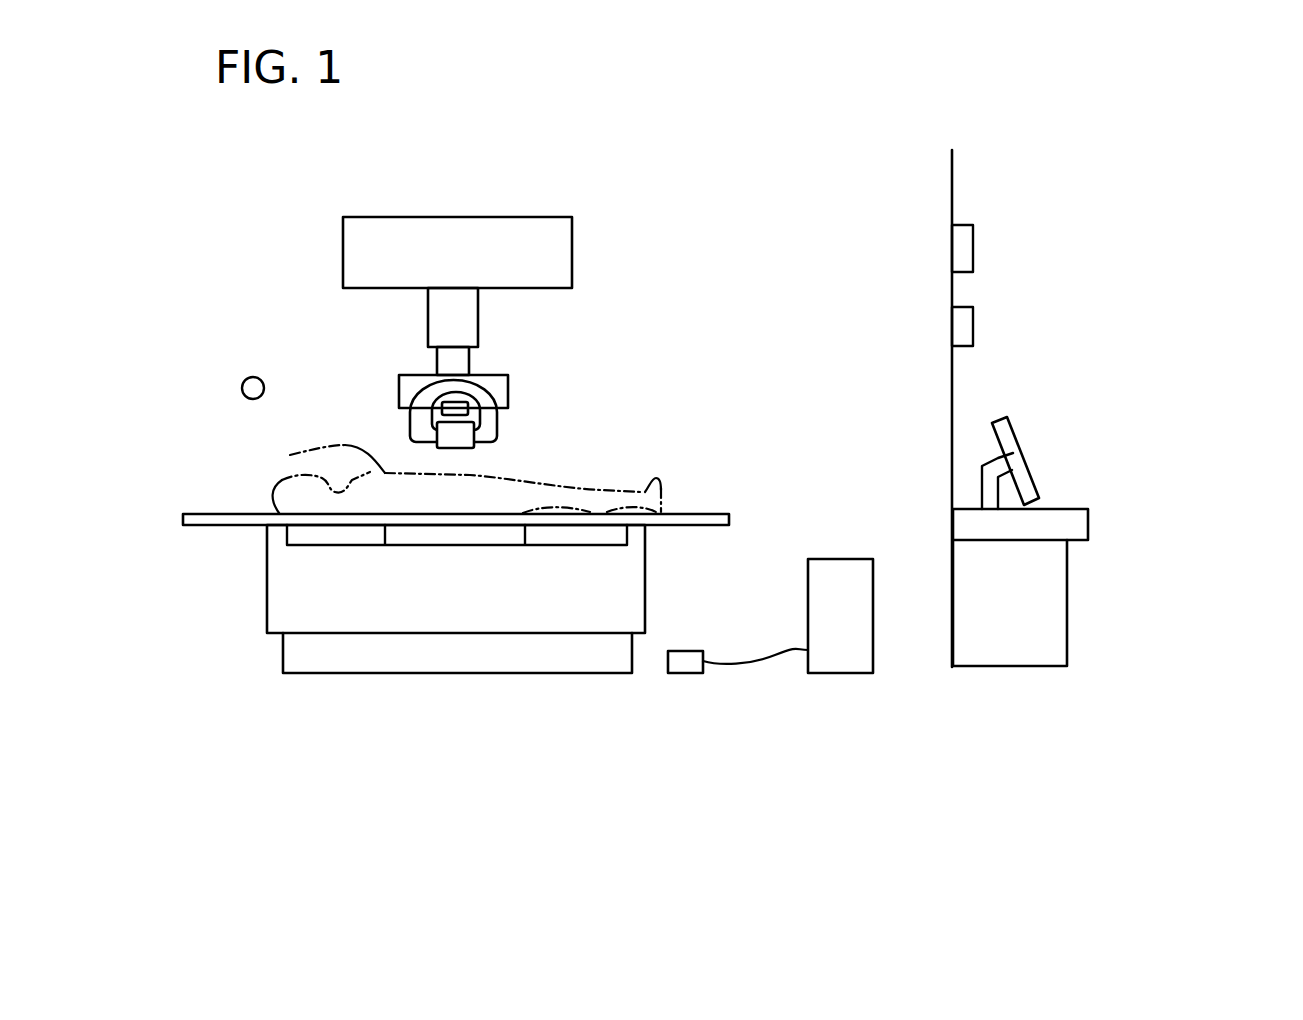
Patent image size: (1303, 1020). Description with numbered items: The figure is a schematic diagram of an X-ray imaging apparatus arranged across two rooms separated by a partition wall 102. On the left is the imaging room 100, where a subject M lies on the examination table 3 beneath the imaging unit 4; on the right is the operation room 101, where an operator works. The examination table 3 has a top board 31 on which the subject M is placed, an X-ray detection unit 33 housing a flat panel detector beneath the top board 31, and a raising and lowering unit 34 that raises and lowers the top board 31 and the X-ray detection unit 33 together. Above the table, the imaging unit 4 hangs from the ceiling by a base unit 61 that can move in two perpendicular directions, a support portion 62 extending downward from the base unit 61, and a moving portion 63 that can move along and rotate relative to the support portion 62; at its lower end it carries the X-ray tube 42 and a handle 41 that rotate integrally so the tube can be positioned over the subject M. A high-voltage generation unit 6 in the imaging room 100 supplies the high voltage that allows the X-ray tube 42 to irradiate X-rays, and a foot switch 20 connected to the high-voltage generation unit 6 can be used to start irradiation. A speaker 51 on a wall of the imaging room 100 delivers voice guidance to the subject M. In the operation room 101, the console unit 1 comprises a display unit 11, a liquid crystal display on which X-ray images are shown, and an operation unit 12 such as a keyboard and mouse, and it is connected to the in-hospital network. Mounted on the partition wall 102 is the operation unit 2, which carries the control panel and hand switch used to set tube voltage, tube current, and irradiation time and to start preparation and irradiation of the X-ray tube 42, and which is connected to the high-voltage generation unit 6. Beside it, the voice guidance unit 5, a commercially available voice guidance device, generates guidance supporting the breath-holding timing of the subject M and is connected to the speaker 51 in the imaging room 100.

The imaging room 100 is at (697, 141).
The operation room 101 is at (1108, 142).
The partition wall 102 is at (952, 195).
The console unit 1 is at (1091, 524).
The operation unit 2 is at (998, 250).
The voice guidance unit 5 is at (998, 328).
The display unit 11 is at (1016, 441).
The operation unit 12 is at (1060, 500).
The high-voltage generation unit 6 is at (835, 572).
The foot switch 20 is at (696, 662).
The examination table 3 is at (481, 596).
The top board 31 is at (690, 514).
The X-ray detection unit 33 is at (443, 538).
The raising and lowering unit 34 is at (485, 615).
The imaging unit 4 is at (499, 377).
The handle 41 is at (410, 418).
The X-ray tube 42 is at (500, 388).
The base unit 61 is at (548, 254).
The support portion 62 is at (440, 320).
The moving portion 63 is at (462, 362).
The speaker 51 is at (252, 377).
The subject M is at (300, 455).